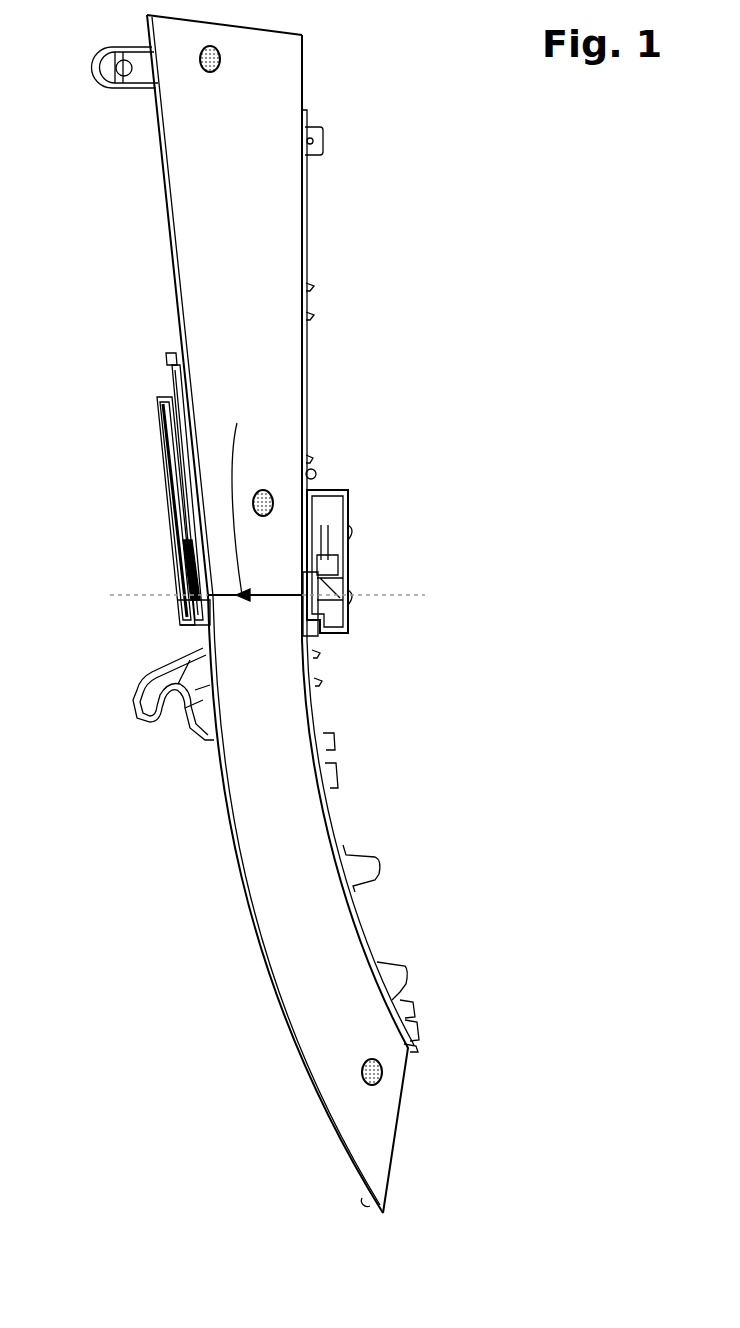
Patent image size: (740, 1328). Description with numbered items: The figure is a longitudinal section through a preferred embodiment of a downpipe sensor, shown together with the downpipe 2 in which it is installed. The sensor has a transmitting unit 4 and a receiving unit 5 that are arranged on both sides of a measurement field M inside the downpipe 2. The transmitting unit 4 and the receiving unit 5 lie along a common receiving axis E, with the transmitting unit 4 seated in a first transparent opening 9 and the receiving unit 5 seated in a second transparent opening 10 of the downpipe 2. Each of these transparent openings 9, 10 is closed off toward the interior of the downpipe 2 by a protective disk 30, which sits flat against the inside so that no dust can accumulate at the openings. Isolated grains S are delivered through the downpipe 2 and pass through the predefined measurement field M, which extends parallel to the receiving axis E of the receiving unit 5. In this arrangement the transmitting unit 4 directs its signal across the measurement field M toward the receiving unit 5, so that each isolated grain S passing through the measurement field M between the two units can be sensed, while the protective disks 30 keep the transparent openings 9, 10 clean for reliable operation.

The downpipe 2 is at (302, 212).
The transmitting unit 4 is at (350, 554).
The receiving unit 5 is at (157, 440).
The first transparent opening 9 is at (305, 630).
The second transparent opening 10 is at (200, 578).
The protective disk 30 is at (300, 603).
The receiving axis E is at (248, 597).
The measurement field M is at (237, 493).
The isolated grains S is at (206, 72).